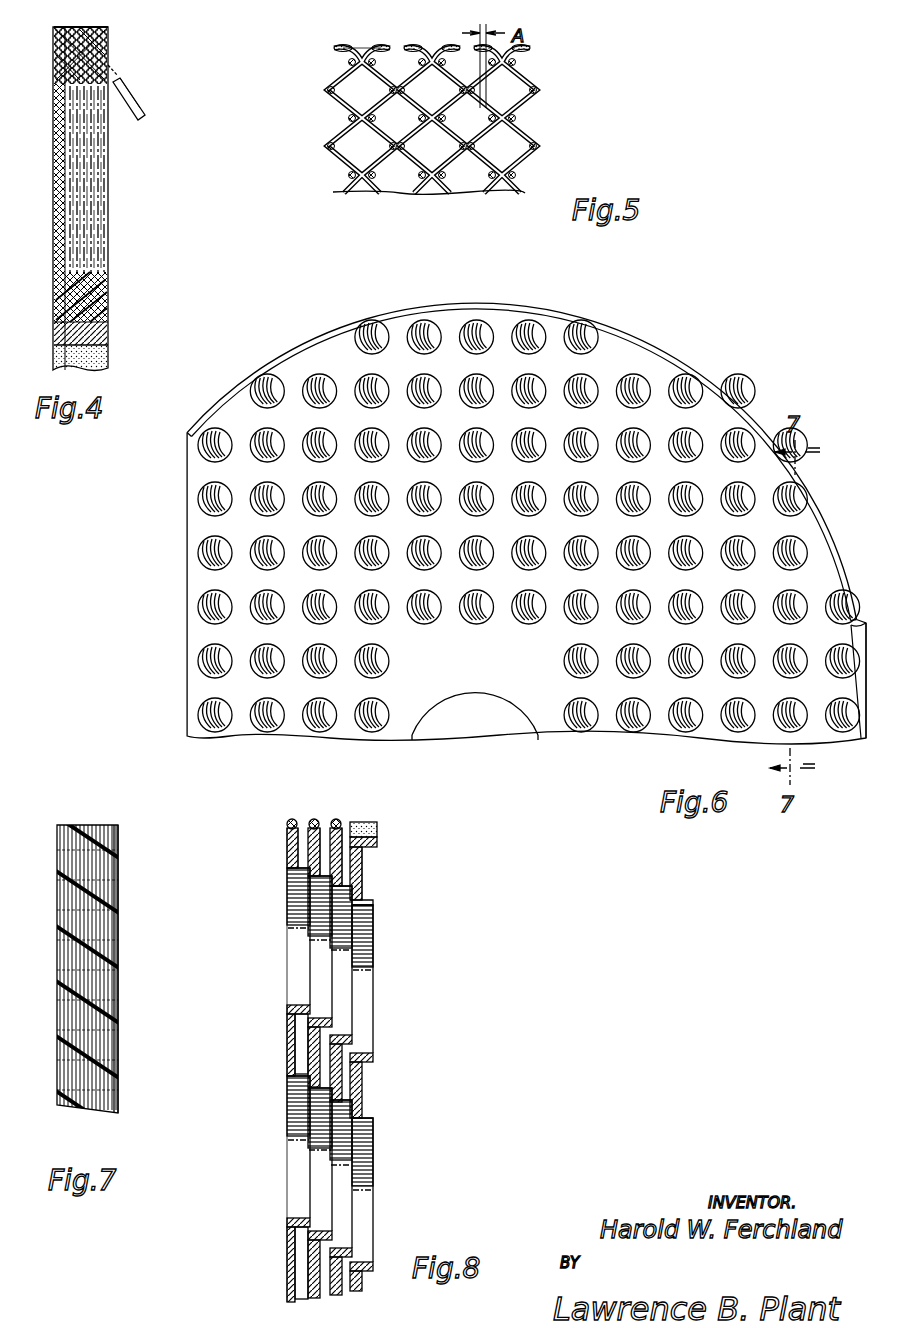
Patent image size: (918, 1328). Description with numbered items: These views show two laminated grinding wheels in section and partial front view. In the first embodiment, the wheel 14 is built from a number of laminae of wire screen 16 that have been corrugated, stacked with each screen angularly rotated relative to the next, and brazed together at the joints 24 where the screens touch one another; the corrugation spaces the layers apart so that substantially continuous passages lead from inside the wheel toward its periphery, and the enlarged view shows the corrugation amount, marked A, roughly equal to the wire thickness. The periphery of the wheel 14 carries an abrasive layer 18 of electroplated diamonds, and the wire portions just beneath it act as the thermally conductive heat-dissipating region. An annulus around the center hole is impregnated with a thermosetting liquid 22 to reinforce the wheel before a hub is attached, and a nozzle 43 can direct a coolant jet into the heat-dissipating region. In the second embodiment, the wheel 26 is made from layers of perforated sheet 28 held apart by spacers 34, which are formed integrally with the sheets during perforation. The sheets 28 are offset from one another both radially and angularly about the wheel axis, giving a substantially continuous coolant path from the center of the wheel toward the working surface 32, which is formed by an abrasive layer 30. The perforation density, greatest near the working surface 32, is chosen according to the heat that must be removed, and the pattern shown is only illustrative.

In FIG. 4, the wheel 14 is at (55, 188).
In FIG. 4, the wire screen 16 is at (106, 64).
In FIG. 5, the wire screen 16 is at (352, 106).
In FIG. 4, the abrasive layer 18 is at (108, 28).
In FIG. 5, the abrasive layer 18 is at (410, 50).
In FIG. 4, the thermosetting liquid 22 is at (98, 335).
In FIG. 4, the joints 24 is at (63, 50).
In FIG. 5, the joints 24 is at (352, 50).
In FIG. 6, the wheel 26 is at (646, 340).
In FIG. 7, the wheel 26 is at (118, 952).
In FIG. 8, the wheel 26 is at (373, 1053).
In FIG. 6, the perforated sheet 28 is at (412, 660).
In FIG. 7, the perforated sheet 28 is at (76, 826).
In FIG. 8, the perforated sheet 28 is at (290, 838).
In FIG. 6, the abrasive layer 30 is at (318, 346).
In FIG. 8, the abrasive layer 30 is at (336, 820).
In FIG. 6, the working surface 32 is at (226, 392).
In FIG. 7, the working surface 32 is at (112, 826).
In FIG. 8, the working surface 32 is at (378, 824).
In FIG. 8, the spacers 34 is at (340, 912).
In FIG. 4, the nozzle 43 is at (142, 118).